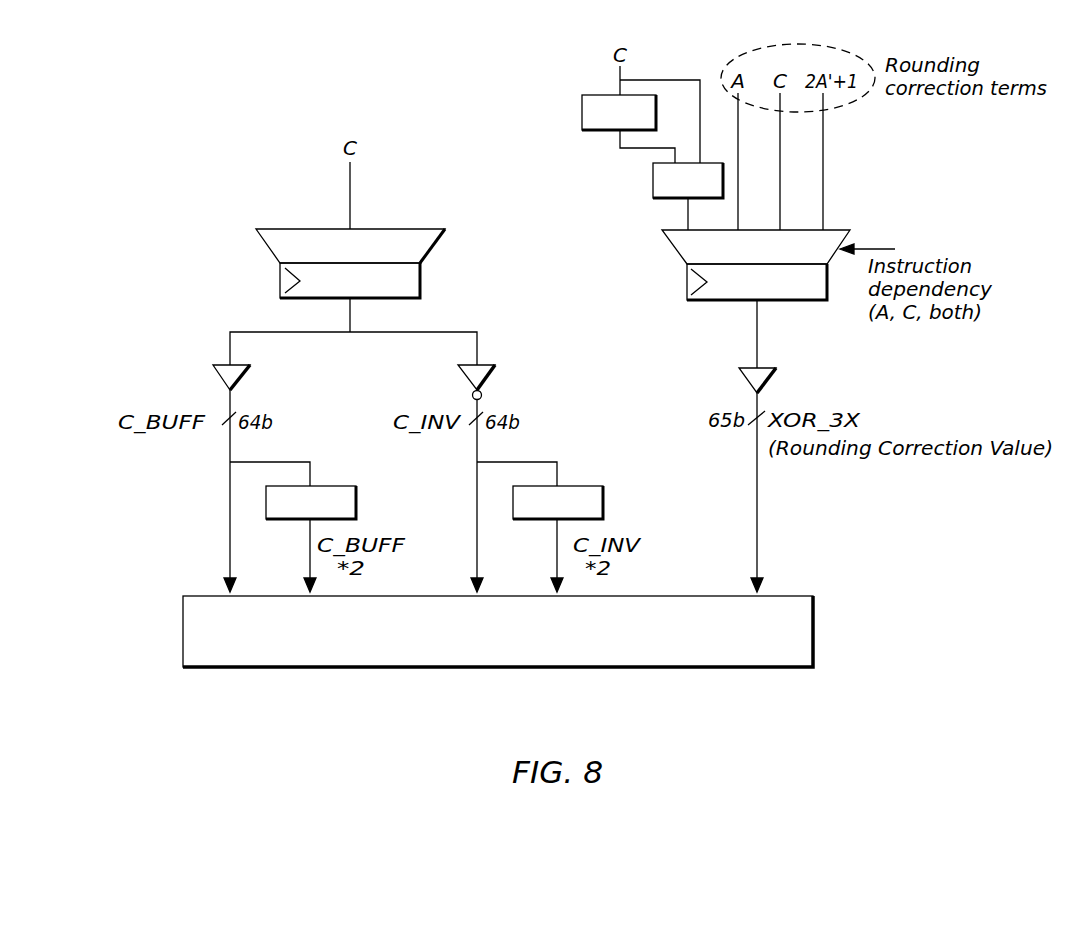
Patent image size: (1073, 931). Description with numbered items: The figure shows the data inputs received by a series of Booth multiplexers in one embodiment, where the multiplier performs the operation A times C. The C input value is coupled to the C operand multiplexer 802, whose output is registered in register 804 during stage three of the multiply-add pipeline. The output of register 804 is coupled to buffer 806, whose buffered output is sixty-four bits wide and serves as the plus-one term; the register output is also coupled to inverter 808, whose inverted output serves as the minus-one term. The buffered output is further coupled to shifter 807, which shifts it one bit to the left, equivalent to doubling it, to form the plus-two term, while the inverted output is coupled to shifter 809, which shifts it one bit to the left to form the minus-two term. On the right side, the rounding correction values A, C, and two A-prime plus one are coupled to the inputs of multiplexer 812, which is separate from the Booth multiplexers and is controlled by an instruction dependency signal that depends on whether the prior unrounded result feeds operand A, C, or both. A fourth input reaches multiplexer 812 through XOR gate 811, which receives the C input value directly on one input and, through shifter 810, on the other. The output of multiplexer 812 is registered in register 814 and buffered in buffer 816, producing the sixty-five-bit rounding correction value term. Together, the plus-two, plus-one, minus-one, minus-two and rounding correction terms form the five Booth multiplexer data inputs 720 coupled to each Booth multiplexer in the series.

The C operand multiplexer 802 is at (298, 229).
The register 804 is at (420, 285).
The buffer 806 is at (214, 365).
The shifter 807 is at (352, 486).
The inverter 808 is at (491, 365).
The shifter 809 is at (599, 486).
The shifter 810 is at (582, 110).
The XOR gate 811 is at (653, 178).
The multiplexer 812 is at (840, 230).
The register 814 is at (687, 283).
The buffer 816 is at (745, 368).
The Booth multiplexer data inputs 720 is at (498, 631).